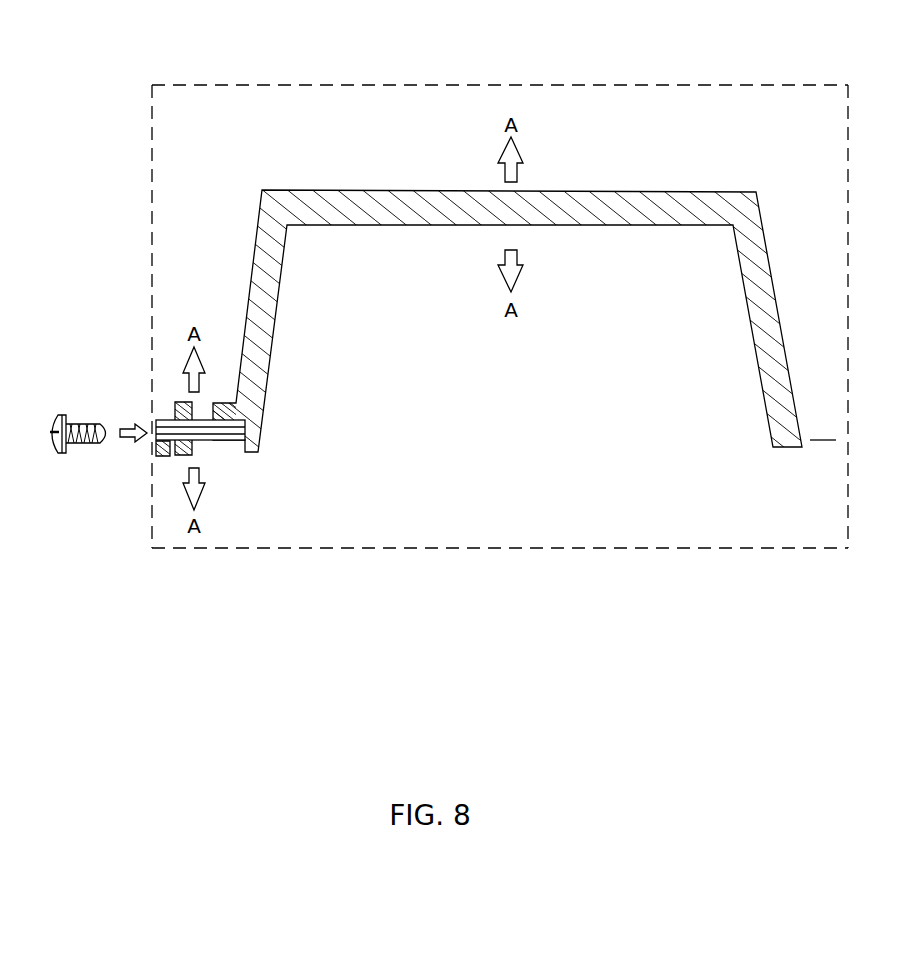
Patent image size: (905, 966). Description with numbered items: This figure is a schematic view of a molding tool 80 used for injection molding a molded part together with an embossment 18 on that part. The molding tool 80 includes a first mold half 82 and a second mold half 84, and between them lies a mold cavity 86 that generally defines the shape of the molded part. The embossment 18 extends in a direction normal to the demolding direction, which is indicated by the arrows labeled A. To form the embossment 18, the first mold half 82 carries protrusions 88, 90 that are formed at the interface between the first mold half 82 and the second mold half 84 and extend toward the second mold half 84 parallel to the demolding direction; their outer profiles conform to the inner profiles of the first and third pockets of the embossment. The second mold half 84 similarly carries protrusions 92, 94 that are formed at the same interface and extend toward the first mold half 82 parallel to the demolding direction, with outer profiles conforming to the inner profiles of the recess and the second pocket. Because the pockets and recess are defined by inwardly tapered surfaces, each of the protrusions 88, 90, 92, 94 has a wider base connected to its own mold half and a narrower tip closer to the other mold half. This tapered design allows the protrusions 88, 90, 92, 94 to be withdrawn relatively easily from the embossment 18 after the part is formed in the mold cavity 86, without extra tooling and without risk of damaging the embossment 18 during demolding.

The molding tool 80 is at (150, 93).
The first mold half 82 is at (622, 535).
The second mold half 84 is at (595, 93).
The mold cavity 86 is at (697, 203).
The protrusion 88 is at (192, 452).
The protrusion 90 is at (229, 457).
The protrusion 92 is at (164, 410).
The protrusion 94 is at (223, 400).
The embossment 18 is at (181, 402).